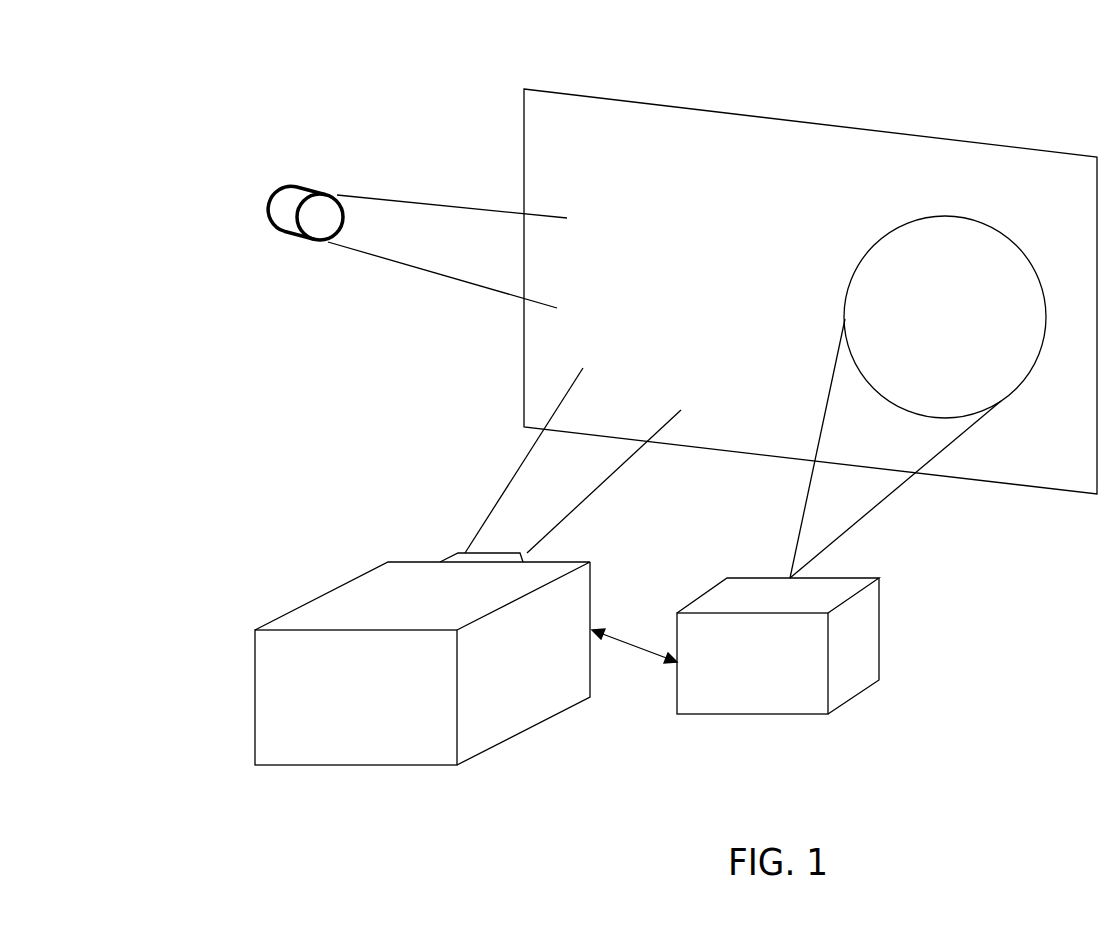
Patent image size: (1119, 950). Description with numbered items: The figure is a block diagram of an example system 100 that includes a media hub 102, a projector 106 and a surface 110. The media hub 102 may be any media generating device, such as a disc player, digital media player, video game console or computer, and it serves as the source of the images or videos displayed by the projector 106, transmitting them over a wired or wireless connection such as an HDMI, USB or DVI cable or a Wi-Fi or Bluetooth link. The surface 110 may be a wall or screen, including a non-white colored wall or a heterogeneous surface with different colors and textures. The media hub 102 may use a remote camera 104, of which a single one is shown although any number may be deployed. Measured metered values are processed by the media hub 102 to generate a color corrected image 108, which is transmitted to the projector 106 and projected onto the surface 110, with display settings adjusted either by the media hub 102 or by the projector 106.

The system 100 is at (188, 49).
The media hub 102 is at (336, 712).
The remote camera 104 is at (298, 183).
The projector 106 is at (732, 677).
The color corrected image 108 is at (927, 330).
The surface 110 is at (792, 176).